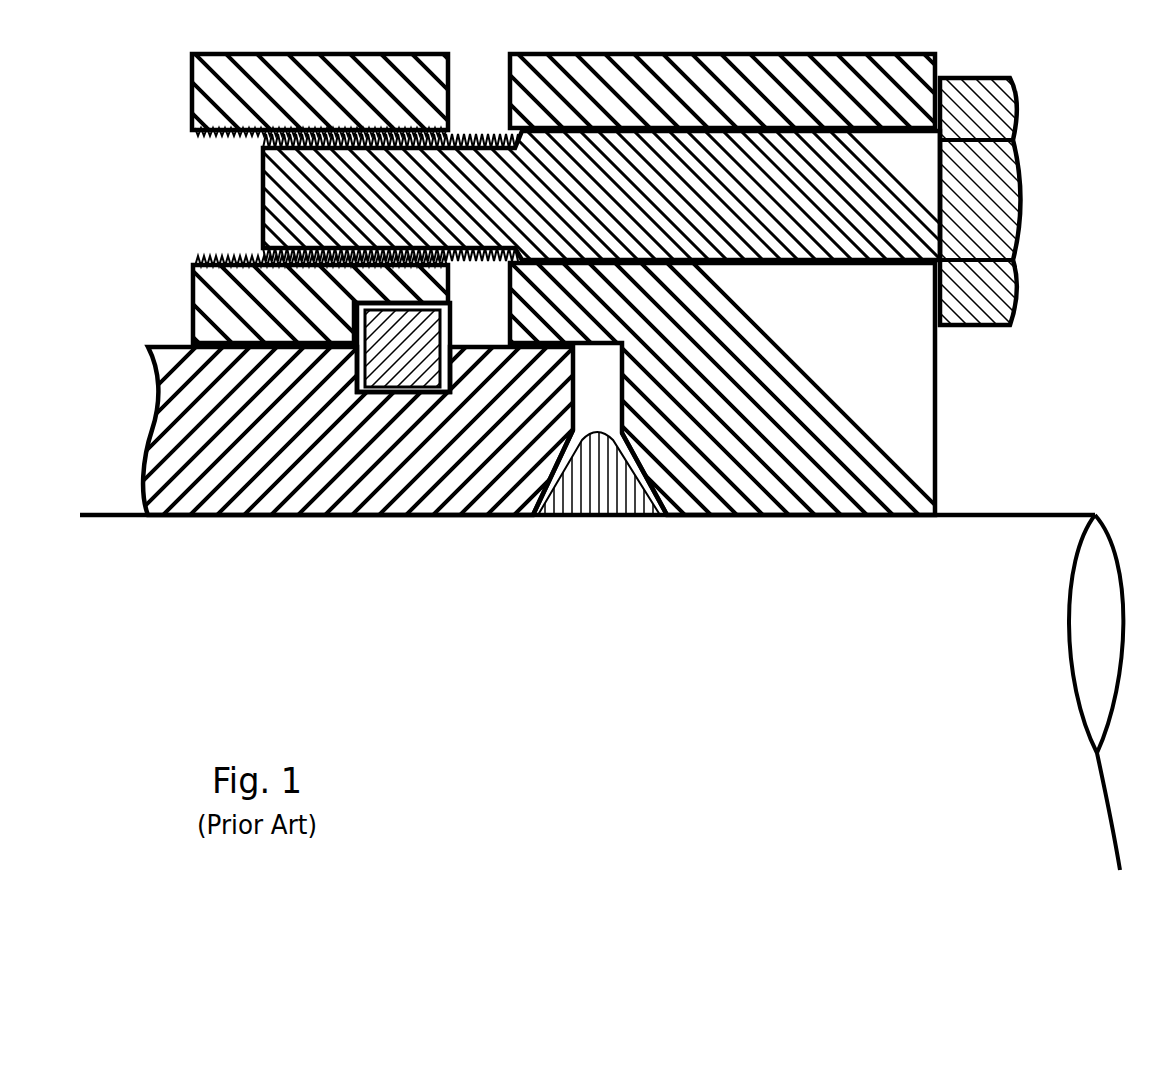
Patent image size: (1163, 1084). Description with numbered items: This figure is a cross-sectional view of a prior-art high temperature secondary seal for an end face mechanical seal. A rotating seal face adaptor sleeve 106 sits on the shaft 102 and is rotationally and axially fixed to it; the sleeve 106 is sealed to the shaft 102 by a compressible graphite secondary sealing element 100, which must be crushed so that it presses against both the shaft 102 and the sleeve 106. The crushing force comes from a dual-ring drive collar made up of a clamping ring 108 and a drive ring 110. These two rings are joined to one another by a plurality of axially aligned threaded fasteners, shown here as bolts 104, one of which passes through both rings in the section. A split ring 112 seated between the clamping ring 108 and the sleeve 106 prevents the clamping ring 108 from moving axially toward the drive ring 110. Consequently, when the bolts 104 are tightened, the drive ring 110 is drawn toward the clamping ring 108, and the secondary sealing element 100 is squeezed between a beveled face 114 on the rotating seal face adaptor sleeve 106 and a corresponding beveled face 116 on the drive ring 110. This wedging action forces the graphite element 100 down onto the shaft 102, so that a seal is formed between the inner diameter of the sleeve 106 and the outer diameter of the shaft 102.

The compressible graphite secondary sealing element 100 is at (600, 500).
The shaft 102 is at (865, 620).
The bolts 104 is at (720, 207).
The seal adaptor sleeve 106 is at (259, 455).
The clamping ring 108 is at (283, 313).
The drive ring 110 is at (810, 373).
The split ring 112 is at (427, 363).
The beveled face of the seal adaptor sleeve 114 is at (537, 490).
The beveled face of the drive ring 116 is at (645, 477).